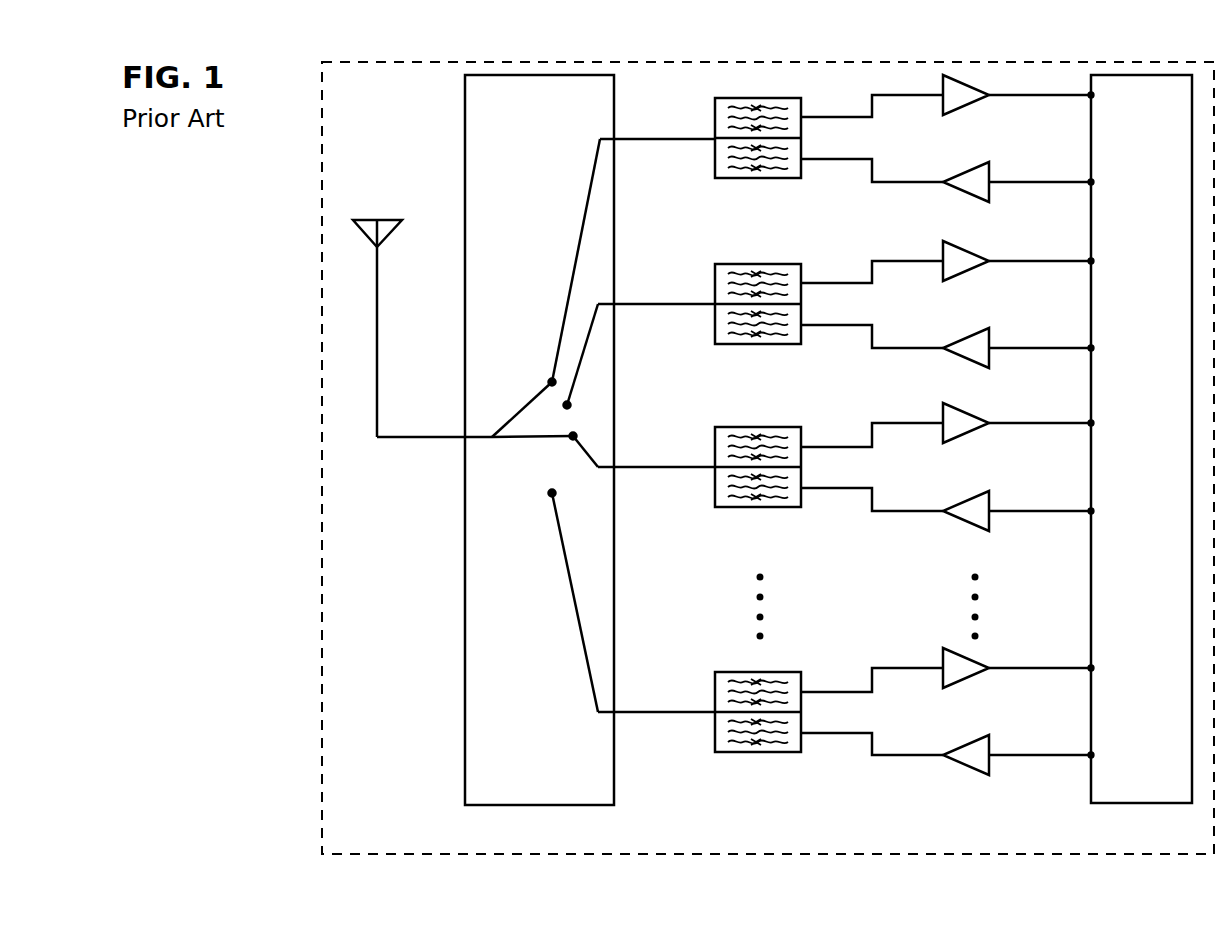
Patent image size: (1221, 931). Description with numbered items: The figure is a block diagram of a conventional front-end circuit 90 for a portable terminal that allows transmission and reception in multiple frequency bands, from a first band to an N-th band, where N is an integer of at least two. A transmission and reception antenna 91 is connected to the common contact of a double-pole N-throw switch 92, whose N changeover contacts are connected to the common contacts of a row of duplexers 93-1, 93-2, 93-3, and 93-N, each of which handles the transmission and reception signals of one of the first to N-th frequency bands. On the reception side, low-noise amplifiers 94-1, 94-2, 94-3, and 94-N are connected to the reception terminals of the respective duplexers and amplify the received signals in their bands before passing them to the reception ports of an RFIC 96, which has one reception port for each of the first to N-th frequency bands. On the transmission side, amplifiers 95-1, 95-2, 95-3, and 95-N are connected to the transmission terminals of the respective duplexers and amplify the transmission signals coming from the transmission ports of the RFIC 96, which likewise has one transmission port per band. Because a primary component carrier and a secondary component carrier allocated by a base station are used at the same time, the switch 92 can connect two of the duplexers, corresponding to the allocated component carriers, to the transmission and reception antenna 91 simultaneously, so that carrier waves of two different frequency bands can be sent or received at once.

The front-end circuit 90 is at (322, 455).
The transmission and reception antenna 91 is at (379, 218).
The double-pole N-throw switch 92 is at (540, 806).
The duplexer 93-1 is at (760, 178).
The duplexer 93-2 is at (760, 344).
The duplexer 93-3 is at (760, 507).
The duplexer 93-N is at (760, 752).
The low-noise amplifier 94-1 is at (967, 107).
The low-noise amplifier 94-2 is at (967, 273).
The low-noise amplifier 94-3 is at (967, 435).
The low-noise amplifier 94-N is at (967, 680).
The amplifier 95-1 is at (967, 193).
The amplifier 95-2 is at (967, 359).
The amplifier 95-3 is at (967, 522).
The amplifier 95-N is at (967, 766).
The RFIC 96 is at (1137, 803).